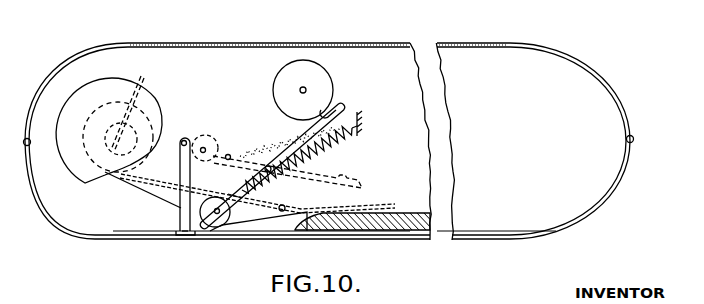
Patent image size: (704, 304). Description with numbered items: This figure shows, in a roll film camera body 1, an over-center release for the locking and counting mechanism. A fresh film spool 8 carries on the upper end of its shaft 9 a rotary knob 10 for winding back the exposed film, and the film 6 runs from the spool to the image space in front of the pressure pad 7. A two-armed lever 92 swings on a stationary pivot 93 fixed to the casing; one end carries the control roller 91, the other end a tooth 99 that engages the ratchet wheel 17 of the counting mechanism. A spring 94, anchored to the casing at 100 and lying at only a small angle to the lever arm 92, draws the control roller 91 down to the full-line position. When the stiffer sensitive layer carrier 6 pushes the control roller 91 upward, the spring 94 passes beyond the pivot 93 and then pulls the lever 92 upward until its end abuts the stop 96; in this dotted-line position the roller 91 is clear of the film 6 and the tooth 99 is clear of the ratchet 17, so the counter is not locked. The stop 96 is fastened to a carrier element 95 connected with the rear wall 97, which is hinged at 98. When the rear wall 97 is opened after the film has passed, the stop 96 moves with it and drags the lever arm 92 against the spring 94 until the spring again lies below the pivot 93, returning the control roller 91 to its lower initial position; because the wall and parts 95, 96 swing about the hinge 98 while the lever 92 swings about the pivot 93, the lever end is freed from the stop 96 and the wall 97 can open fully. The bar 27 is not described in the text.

The camera body 1 is at (448, 42).
The film 6 is at (135, 189).
The pressure pad 7 is at (361, 223).
The film spool 8 is at (112, 177).
The shaft 9 is at (118, 121).
The rotary knob 10 is at (108, 89).
The ratchet wheel 17 is at (297, 72).
The bar 27 is at (254, 224).
The control roller 91 is at (220, 224).
The two-armed lever 92 is at (237, 197).
The pivot 93 is at (263, 169).
The spring 94 is at (320, 150).
The carrier element 95 is at (182, 218).
The stop 96 is at (184, 139).
The rear wall 97 is at (88, 234).
The hinge 98 is at (626, 141).
The tooth 99 is at (343, 105).
The spring anchorage 100 is at (359, 124).